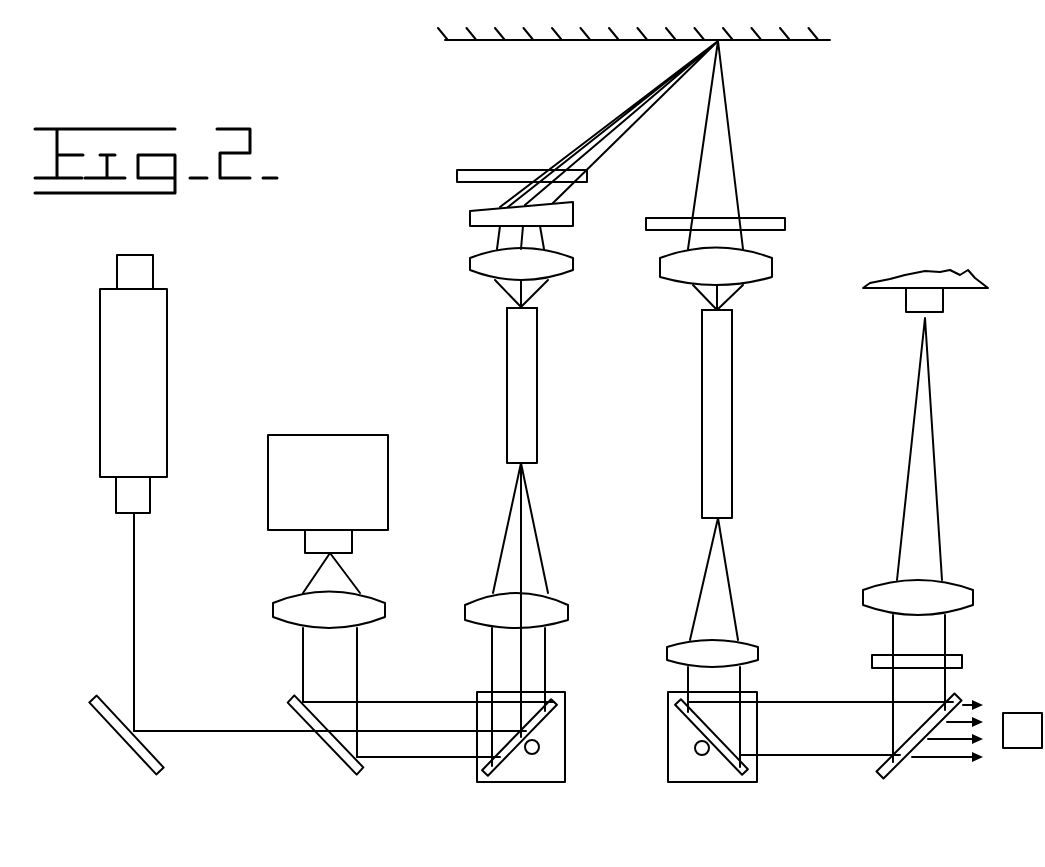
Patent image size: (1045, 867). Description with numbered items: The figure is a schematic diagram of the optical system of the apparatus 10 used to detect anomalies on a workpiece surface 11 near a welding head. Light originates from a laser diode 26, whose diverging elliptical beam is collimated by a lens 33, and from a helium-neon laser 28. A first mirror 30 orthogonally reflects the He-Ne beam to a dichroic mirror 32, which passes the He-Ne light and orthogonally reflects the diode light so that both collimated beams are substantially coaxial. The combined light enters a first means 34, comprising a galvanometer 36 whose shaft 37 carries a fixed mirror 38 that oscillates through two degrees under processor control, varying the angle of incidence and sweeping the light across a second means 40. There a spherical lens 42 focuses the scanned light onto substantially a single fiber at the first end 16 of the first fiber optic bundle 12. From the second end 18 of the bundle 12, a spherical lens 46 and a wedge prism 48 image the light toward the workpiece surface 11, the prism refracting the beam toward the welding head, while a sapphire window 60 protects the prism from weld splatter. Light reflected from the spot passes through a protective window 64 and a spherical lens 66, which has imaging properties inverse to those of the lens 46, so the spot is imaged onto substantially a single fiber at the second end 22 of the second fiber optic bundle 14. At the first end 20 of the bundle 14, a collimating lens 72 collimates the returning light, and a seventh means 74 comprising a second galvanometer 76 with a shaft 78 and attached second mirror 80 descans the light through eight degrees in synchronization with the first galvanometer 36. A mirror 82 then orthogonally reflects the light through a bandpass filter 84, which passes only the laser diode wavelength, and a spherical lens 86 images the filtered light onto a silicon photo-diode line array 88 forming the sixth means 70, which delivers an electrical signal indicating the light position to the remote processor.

The apparatus 10 is at (376, 96).
The workpiece surface 11 is at (585, 42).
The first fiber optic bundle 12 is at (538, 368).
The second fiber optic bundle 14 is at (733, 365).
The first end of the first fiber optic bundle 16 is at (522, 463).
The second end of the first fiber optic bundle 18 is at (528, 307).
The first end of the second fiber optic bundle 20 is at (718, 520).
The second end of the second fiber optic bundle 22 is at (722, 308).
The laser diode 26 is at (344, 487).
The helium-neon laser 28 is at (153, 340).
The first mirror 30 is at (103, 697).
The dichroic mirror 32 is at (292, 697).
The lens 33 is at (372, 598).
The first means 34 is at (572, 656).
The galvanometer 36 is at (555, 732).
The galvanometer shaft 37 is at (540, 748).
The first mirror 38 is at (563, 704).
The second means 40 is at (572, 558).
The spherical lens 42 is at (470, 608).
The spherical lens 46 is at (470, 264).
The wedge prism 48 is at (470, 218).
The window 60 is at (457, 176).
The protective window 64 is at (775, 218).
The spherical lens 66 is at (772, 265).
The sixth means 70 is at (882, 409).
The collimating lens 72 is at (752, 645).
The seventh means 74 is at (768, 768).
The second galvanometer 76 is at (668, 764).
The shaft 78 is at (716, 748).
The second mirror 80 is at (672, 717).
The mirror 82 is at (907, 748).
The bandpass filter 84 is at (878, 653).
The spherical lens 86 is at (877, 585).
The silicon photo-diode line array 88 is at (906, 296).